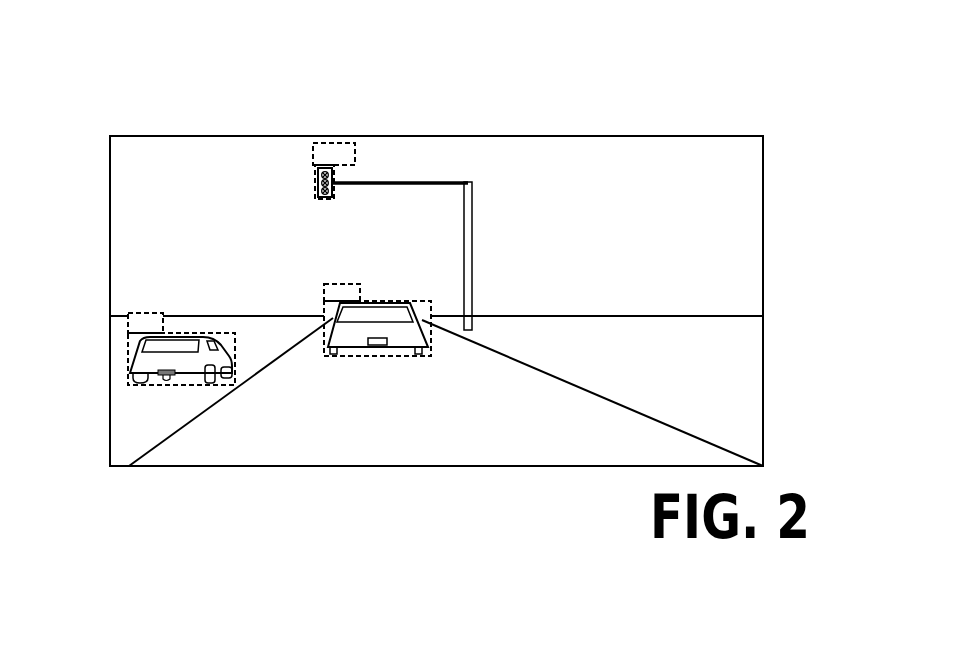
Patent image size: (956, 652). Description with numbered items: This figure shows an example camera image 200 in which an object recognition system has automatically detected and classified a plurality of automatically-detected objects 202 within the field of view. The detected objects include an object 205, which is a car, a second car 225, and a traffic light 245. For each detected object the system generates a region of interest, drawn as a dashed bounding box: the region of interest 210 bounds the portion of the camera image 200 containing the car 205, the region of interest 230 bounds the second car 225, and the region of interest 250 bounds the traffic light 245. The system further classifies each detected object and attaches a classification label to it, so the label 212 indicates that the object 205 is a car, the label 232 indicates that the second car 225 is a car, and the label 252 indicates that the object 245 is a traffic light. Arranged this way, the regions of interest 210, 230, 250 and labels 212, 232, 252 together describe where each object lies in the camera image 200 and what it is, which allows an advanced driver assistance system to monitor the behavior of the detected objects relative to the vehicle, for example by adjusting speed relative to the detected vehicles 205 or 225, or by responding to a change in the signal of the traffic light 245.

The camera image 200 is at (763, 90).
The plurality of automatically-detected objects 202 is at (155, 105).
The object (car) 205 is at (140, 347).
The region of interest 210 is at (128, 368).
The label 212 is at (147, 313).
The second car 225 is at (412, 337).
The region of interest 230 is at (424, 302).
The label 232 is at (338, 284).
The traffic light 245 is at (316, 183).
The region of interest 250 is at (320, 200).
The label 252 is at (342, 143).